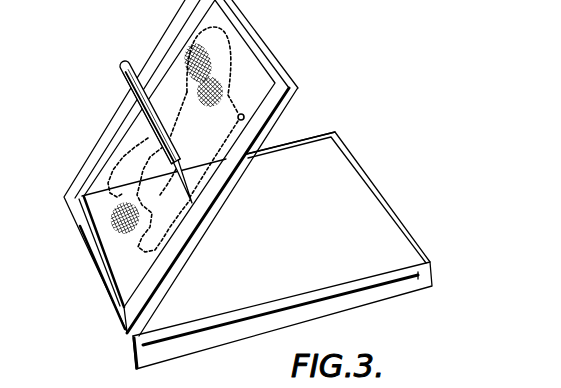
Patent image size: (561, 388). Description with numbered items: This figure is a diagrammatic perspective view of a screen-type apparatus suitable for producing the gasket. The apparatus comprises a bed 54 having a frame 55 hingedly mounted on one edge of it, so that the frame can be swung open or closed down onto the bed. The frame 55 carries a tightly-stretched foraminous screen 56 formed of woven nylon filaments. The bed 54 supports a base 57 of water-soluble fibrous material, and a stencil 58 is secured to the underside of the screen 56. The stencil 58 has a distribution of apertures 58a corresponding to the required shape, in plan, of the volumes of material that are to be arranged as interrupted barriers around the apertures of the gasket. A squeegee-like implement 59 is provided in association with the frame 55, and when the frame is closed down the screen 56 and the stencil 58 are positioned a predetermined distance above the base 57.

The bed 54 is at (412, 276).
The frame 55 is at (127, 314).
The foraminous screen 56 is at (245, 72).
The base 57 is at (372, 220).
The stencil 58 is at (225, 117).
The apertures 58a is at (232, 108).
The squeegee-like implement 59 is at (119, 63).